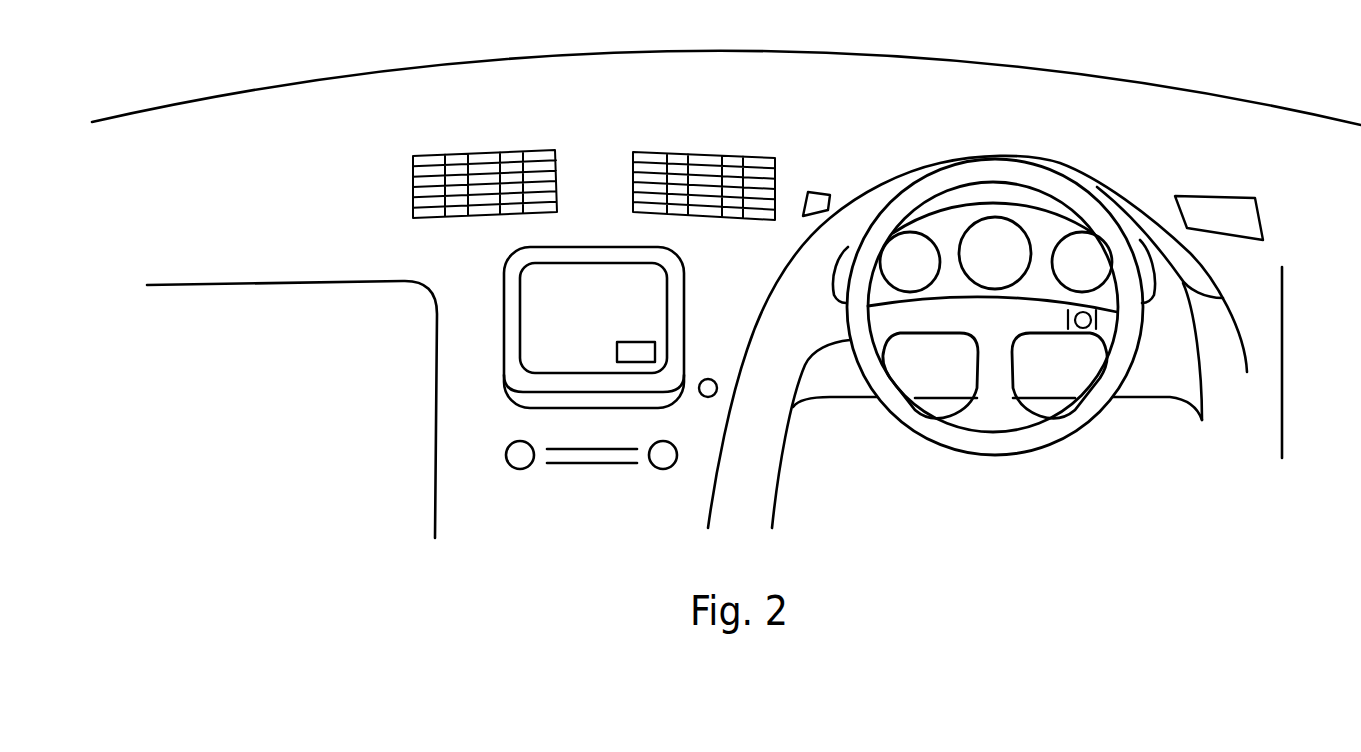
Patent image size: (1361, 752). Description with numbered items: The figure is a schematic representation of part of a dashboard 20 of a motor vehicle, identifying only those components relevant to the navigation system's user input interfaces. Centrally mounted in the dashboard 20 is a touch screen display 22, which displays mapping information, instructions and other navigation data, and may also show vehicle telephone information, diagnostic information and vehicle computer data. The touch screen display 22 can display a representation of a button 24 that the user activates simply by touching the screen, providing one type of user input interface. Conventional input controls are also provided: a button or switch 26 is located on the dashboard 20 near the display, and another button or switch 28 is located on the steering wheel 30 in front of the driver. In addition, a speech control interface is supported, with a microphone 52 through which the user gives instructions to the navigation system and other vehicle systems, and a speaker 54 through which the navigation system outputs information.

The dashboard 20 is at (283, 464).
The touch screen display 22 is at (657, 306).
The button 24 is at (657, 352).
The button or switch 26 is at (708, 397).
The button or switch 28 is at (1083, 330).
The steering wheel 30 is at (1012, 172).
The microphone 52 is at (826, 192).
The speaker 54 is at (1243, 224).